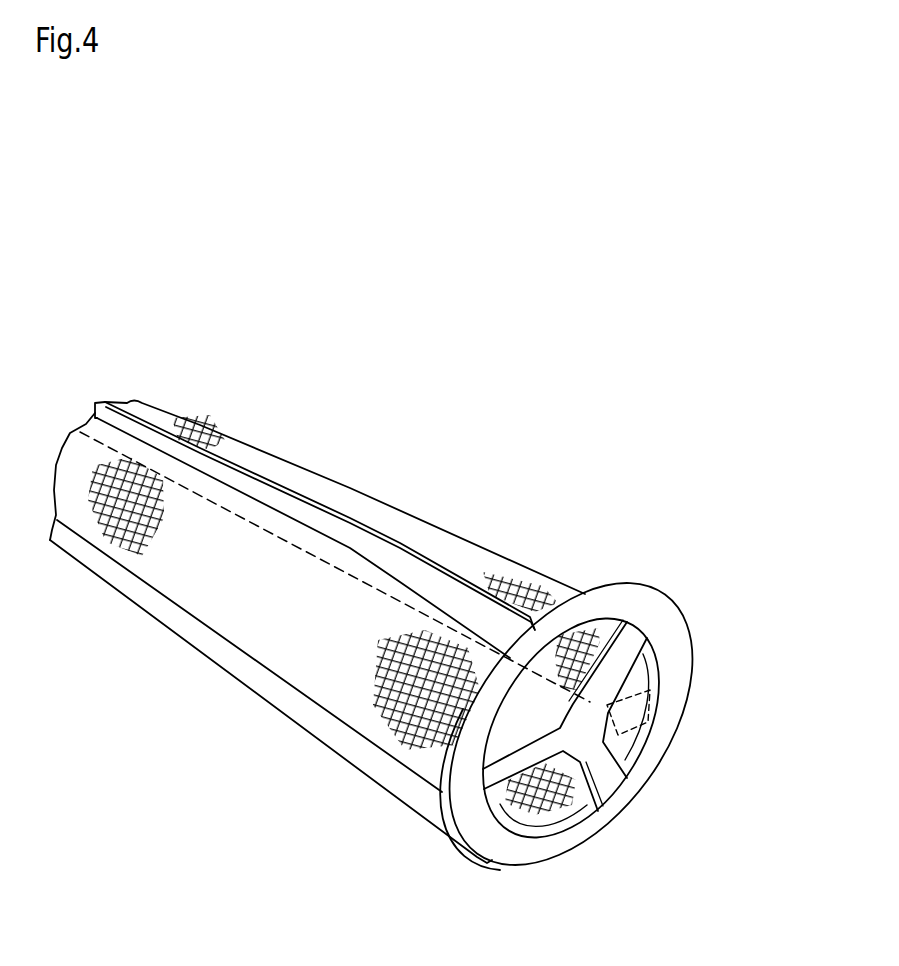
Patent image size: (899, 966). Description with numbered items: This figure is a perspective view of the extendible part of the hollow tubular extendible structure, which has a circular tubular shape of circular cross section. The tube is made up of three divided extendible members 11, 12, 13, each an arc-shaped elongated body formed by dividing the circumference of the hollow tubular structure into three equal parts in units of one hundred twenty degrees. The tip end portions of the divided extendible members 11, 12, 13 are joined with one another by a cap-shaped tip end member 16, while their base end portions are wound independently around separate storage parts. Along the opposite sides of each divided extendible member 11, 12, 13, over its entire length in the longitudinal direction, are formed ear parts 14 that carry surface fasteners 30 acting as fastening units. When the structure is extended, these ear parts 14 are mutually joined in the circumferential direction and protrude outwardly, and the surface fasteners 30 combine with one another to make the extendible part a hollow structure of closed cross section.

The divided extendible member 11 is at (343, 663).
The divided extendible member 12 is at (570, 793).
The divided extendible member 13 is at (560, 583).
The ear part 14 is at (525, 568).
The cap-shaped tip end member 16 is at (680, 655).
The surface fastener 30 is at (427, 551).